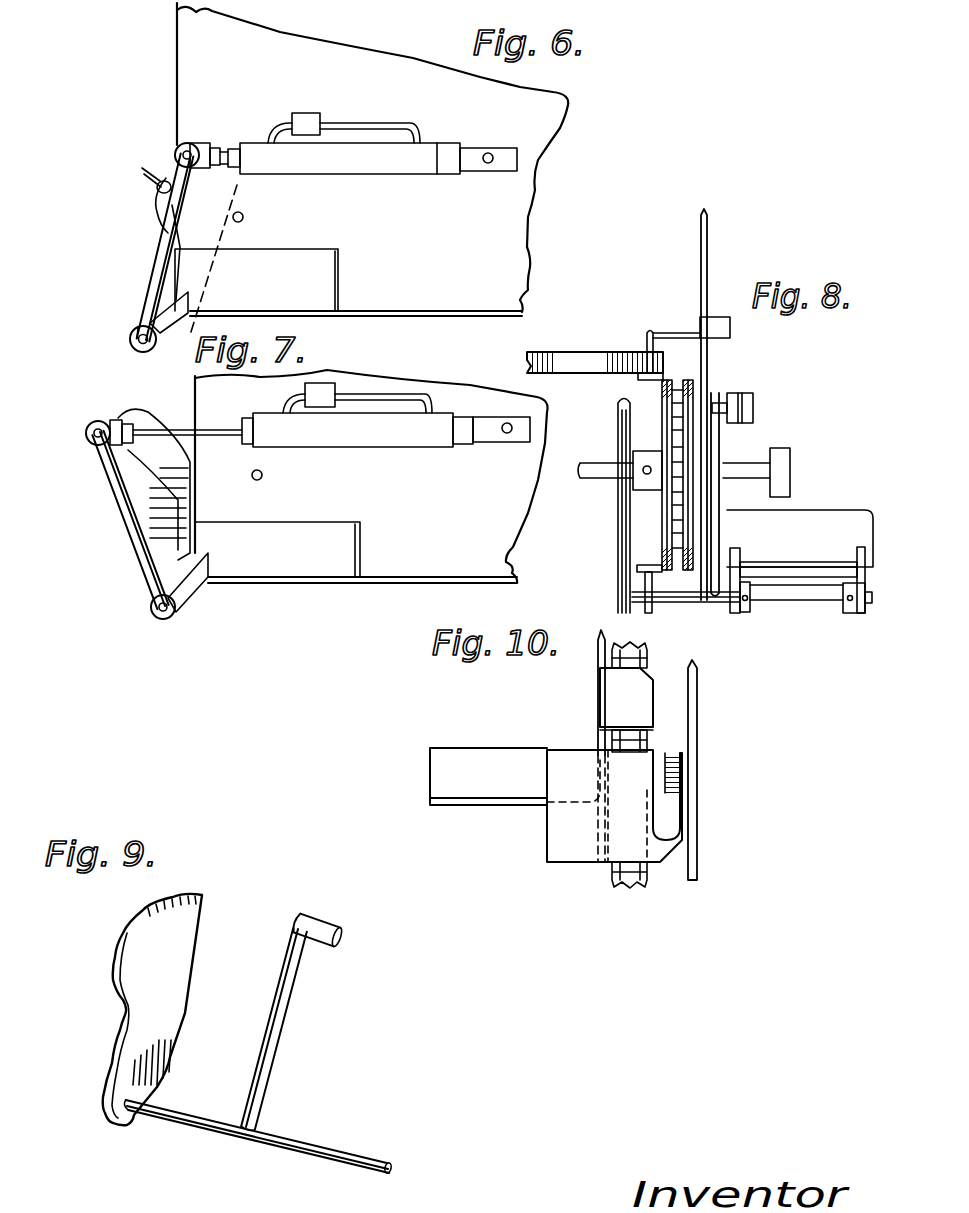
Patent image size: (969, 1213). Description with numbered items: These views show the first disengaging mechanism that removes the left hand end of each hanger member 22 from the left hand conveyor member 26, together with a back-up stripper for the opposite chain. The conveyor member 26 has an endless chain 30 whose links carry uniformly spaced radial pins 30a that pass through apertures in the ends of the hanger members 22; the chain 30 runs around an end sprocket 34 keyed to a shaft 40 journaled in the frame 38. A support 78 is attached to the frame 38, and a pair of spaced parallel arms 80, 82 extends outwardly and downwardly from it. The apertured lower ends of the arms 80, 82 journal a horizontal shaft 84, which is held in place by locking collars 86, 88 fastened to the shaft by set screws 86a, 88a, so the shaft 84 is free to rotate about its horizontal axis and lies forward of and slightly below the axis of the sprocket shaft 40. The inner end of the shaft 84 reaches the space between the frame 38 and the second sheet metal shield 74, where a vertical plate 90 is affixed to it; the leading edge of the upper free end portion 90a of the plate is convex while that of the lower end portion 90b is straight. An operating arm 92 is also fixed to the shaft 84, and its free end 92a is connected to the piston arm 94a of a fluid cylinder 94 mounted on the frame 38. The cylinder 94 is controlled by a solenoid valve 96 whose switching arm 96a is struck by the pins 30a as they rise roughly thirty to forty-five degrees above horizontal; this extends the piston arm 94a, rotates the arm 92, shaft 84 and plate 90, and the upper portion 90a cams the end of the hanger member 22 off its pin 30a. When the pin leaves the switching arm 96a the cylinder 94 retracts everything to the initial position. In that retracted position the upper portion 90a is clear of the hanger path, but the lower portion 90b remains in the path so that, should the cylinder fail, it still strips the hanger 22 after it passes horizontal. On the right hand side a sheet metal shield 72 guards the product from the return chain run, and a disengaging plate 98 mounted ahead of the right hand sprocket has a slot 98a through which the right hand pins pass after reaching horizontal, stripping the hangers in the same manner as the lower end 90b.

In FIG. 6, the hanger member 22 is at (158, 187).
In FIG. 8, the hanger member 22 is at (552, 340).
In FIG. 8, the left hand conveyor member 26 is at (680, 373).
In FIG. 8, the endless chain 30 is at (690, 397).
In FIG. 6, the pins 30a is at (154, 172).
In FIG. 7, the pins 30a is at (190, 478).
In FIG. 8, the pins 30a is at (647, 335).
In FIG. 8, the end sprocket 34 is at (665, 413).
In FIG. 6, the frame 38 is at (425, 316).
In FIG. 7, the frame 38 is at (400, 578).
In FIG. 8, the frame 38 is at (701, 228).
In FIG. 10, the frame 38 is at (602, 637).
In FIG. 8, the shaft 40 is at (600, 447).
In FIG. 10, the sheet metal shield 72 is at (697, 765).
In FIG. 8, the second sheet metal shield 74 is at (618, 495).
In FIG. 6, the support 78 is at (340, 255).
In FIG. 7, the support 78 is at (355, 535).
In FIG. 8, the support 78 is at (807, 511).
In FIG. 8, the arm 80 is at (740, 570).
In FIG. 6, the arm 82 is at (195, 320).
In FIG. 7, the arm 82 is at (195, 600).
In FIG. 8, the arm 82 is at (857, 554).
In FIG. 6, the horizontal shaft 84 is at (131, 348).
In FIG. 7, the horizontal shaft 84 is at (152, 612).
In FIG. 8, the horizontal shaft 84 is at (652, 602).
In FIG. 9, the horizontal shaft 84 is at (332, 1150).
In FIG. 8, the locking collar 86 is at (750, 612).
In FIG. 8, the set screw 86a is at (767, 610).
In FIG. 8, the locking collar 88 is at (860, 615).
In FIG. 8, the set screw 88a is at (840, 605).
In FIG. 6, the vertical plate 90 is at (158, 212).
In FIG. 7, the vertical plate 90 is at (130, 478).
In FIG. 8, the vertical plate 90 is at (622, 533).
In FIG. 9, the vertical plate 90 is at (175, 1000).
In FIG. 9, the upper end portion 90a is at (136, 927).
In FIG. 6, the lower end portion 90b is at (138, 328).
In FIG. 9, the lower end portion 90b is at (112, 1047).
In FIG. 6, the operating arm 92 is at (162, 255).
In FIG. 7, the operating arm 92 is at (135, 530).
In FIG. 8, the operating arm 92 is at (722, 448).
In FIG. 9, the operating arm 92 is at (290, 1016).
In FIG. 6, the free end 92a is at (191, 143).
In FIG. 7, the free end 92a is at (87, 437).
In FIG. 8, the free end 92a is at (753, 393).
In FIG. 9, the free end 92a is at (323, 920).
In FIG. 6, the fluid cylinder 94 is at (336, 178).
In FIG. 7, the fluid cylinder 94 is at (314, 432).
In FIG. 6, the piston arm 94a is at (222, 136).
In FIG. 7, the piston arm 94a is at (176, 400).
In FIG. 6, the solenoid valve 96 is at (298, 113).
In FIG. 7, the solenoid valve 96 is at (322, 383).
In FIG. 8, the solenoid valve 96 is at (720, 317).
In FIG. 8, the switching arm 96a is at (660, 332).
In FIG. 10, the disengaging plate 98 is at (583, 853).
In FIG. 10, the slot 98a is at (668, 822).